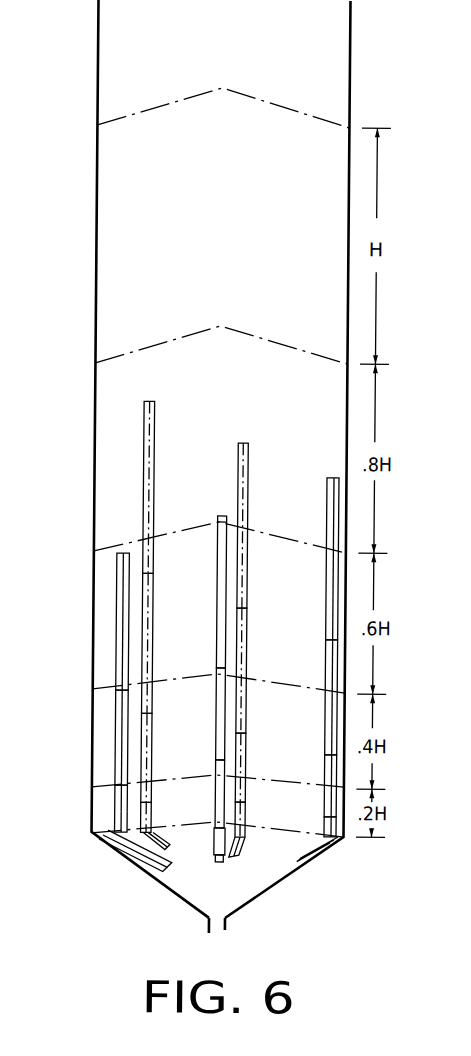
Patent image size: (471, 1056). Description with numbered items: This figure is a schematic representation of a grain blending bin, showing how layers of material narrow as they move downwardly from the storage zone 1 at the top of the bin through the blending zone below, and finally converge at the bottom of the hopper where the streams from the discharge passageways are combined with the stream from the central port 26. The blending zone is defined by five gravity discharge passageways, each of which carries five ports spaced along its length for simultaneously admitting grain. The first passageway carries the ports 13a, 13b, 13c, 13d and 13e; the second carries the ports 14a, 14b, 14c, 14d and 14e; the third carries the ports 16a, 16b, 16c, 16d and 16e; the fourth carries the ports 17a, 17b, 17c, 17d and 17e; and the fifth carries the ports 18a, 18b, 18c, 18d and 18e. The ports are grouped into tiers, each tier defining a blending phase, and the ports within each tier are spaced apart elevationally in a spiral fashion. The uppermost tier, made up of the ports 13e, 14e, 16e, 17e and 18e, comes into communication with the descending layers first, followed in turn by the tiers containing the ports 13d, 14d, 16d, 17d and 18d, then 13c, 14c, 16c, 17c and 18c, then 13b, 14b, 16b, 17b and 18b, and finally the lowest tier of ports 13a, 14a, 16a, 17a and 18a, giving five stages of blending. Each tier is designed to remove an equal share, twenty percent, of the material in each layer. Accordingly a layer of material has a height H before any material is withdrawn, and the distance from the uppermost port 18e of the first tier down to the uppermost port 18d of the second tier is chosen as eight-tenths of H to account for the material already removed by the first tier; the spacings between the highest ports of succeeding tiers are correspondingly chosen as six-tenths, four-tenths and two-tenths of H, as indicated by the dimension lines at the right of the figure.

The storage zone 1 is at (272, 105).
The central port 26 is at (228, 933).
The port 13a is at (169, 874).
The port 13b is at (128, 833).
The port 13c is at (128, 786).
The port 13d is at (127, 691).
The port 13e is at (126, 554).
The port 14a is at (220, 860).
The port 14b is at (225, 832).
The port 14c is at (224, 760).
The port 14d is at (228, 668).
The port 14e is at (224, 516).
The port 16a is at (309, 856).
The port 16b is at (334, 816).
The port 16c is at (333, 754).
The port 16d is at (332, 639).
The port 16e is at (337, 477).
The port 17a is at (238, 863).
The port 17b is at (248, 805).
The port 17c is at (248, 733).
The port 17d is at (247, 608).
The port 17e is at (247, 443).
The port 18a is at (170, 851).
The port 18b is at (154, 803).
The port 18c is at (154, 714).
The port 18d is at (153, 574).
The port 18e is at (153, 402).